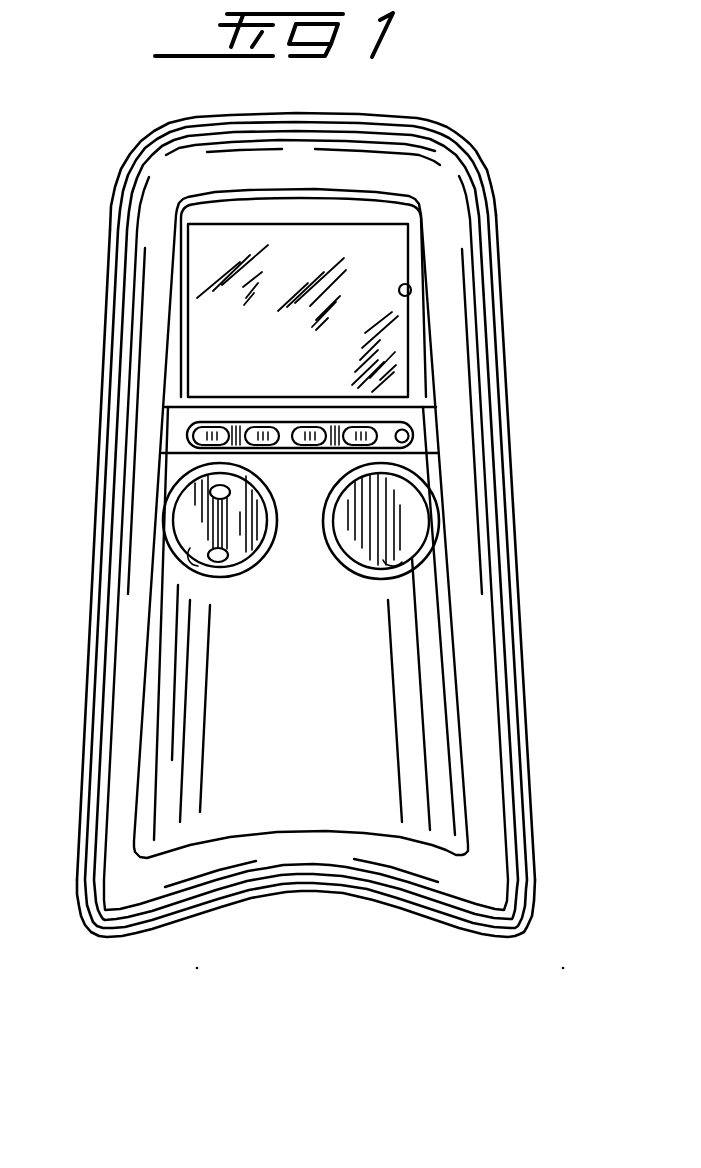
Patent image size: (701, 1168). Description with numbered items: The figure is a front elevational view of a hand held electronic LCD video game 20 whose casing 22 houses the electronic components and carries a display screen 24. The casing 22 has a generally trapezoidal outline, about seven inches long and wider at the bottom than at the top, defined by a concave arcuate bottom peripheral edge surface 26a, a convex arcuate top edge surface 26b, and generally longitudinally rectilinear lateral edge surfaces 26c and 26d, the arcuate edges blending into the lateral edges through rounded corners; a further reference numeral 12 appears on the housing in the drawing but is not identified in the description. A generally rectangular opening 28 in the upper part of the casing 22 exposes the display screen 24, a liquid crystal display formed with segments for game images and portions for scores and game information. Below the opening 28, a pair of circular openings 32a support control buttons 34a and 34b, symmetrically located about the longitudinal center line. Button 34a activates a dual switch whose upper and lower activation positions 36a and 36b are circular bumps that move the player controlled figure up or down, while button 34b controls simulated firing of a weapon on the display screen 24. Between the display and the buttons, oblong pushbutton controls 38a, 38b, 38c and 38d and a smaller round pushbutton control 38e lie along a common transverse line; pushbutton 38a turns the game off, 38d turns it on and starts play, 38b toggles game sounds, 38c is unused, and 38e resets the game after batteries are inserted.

The housing 12 is at (500, 500).
The hand held game 20 is at (97, 126).
The casing 22 is at (448, 177).
The display screen 24 is at (392, 325).
The bottom peripheral edge surface 26a is at (289, 892).
The top edge surface 26b is at (398, 121).
The lateral edge surface 26c is at (110, 250).
The lateral edge surface 26d is at (494, 247).
The rectangular opening 28 is at (411, 290).
The circular openings 32a is at (212, 562).
The control button 34a is at (252, 548).
The control button 34b is at (350, 548).
The upper activation position 36a is at (232, 491).
The lower activation position 36b is at (228, 552).
The pushbutton control 38a is at (190, 430).
The pushbutton control 38b is at (242, 430).
The pushbutton control 38c is at (252, 426).
The pushbutton control 38d is at (350, 425).
The pushbutton control 38e is at (410, 428).